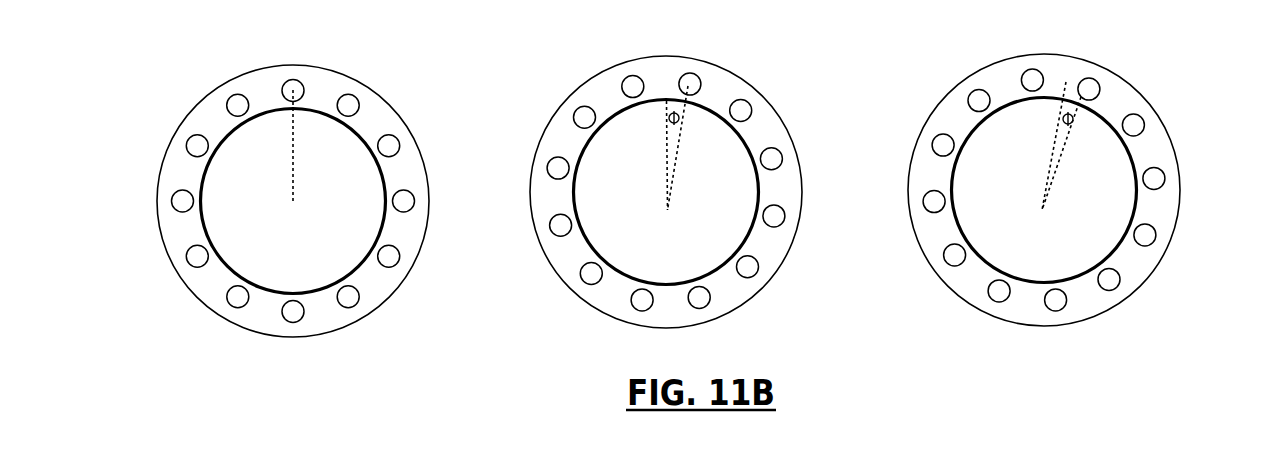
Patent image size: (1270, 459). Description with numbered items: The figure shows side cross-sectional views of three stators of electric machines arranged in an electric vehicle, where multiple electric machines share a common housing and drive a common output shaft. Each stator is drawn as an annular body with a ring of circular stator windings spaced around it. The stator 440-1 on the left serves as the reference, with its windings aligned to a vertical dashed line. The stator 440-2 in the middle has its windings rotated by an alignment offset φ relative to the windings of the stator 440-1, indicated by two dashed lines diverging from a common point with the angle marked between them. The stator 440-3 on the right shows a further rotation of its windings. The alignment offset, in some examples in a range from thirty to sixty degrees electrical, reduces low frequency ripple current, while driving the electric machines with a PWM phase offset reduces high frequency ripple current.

The stator 440-1 is at (311, 189).
The stator 440-2 is at (699, 180).
The stator 440-3 is at (1087, 180).